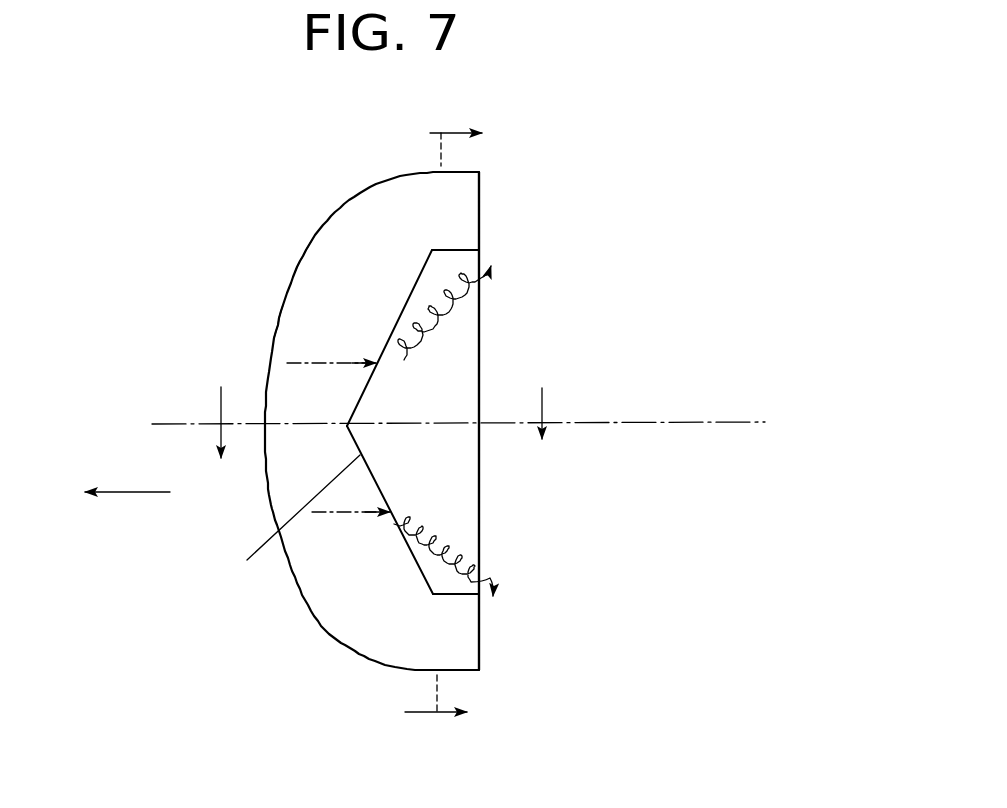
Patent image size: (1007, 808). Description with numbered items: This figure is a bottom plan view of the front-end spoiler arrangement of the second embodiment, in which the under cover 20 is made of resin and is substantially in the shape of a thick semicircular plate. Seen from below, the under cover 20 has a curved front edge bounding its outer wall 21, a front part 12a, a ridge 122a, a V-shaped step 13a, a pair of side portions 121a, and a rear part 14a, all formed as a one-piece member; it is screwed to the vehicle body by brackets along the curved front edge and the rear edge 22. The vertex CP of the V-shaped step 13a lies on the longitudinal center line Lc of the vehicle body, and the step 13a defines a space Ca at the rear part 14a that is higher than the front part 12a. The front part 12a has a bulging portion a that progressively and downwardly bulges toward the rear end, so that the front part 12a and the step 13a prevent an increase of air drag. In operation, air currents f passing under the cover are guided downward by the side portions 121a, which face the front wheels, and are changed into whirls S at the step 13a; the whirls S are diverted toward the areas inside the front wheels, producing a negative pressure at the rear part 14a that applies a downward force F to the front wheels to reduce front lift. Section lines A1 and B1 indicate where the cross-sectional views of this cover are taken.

The under cover 20 is at (511, 213).
The curved outer surface 21 is at (298, 256).
The front part 12a is at (297, 330).
The rear edge 22 is at (480, 368).
The side portions 121a is at (455, 219).
The step 13a is at (383, 491).
The rear part 14a is at (453, 452).
The vertex CP is at (351, 424).
The space Ca is at (459, 472).
The whirls S is at (480, 310).
The ridge 122a is at (278, 530).
The air currents f is at (345, 363).
The bulging portion a is at (301, 475).
The force F is at (133, 494).
The longitudinal center line Lc is at (171, 421).
The section line A1 is at (218, 430).
The section line B1 is at (450, 133).